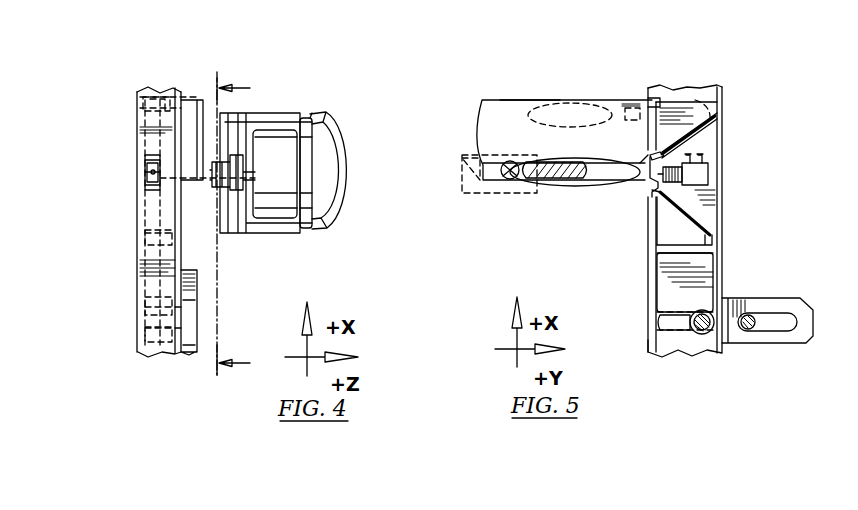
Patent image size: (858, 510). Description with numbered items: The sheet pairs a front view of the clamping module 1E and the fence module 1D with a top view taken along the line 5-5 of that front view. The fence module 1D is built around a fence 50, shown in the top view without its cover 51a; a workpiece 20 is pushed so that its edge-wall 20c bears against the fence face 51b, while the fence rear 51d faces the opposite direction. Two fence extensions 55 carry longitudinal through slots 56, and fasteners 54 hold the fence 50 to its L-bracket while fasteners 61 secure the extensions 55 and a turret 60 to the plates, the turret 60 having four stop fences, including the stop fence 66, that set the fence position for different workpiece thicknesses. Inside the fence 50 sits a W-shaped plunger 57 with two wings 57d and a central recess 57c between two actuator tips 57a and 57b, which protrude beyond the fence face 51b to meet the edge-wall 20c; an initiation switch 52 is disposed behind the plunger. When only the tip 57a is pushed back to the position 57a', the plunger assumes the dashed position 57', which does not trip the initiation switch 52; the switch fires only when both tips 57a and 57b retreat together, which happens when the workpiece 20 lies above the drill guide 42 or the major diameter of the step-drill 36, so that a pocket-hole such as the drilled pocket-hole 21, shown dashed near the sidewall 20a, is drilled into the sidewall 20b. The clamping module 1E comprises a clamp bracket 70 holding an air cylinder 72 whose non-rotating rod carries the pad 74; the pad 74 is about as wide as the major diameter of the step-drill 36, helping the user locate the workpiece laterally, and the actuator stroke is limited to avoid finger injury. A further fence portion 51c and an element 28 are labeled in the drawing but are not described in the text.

In FIG. 4, the fence module 1D is at (155, 86).
In FIG. 5, the fence module 1D is at (730, 233).
In FIG. 4, the clamping module 1E is at (312, 113).
In FIG. 4, the line 5- 5 is at (243, 227).
In FIG. 4, the first workpiece 20 is at (186, 98).
In FIG. 5, the first workpiece 20 is at (481, 128).
In FIG. 5, the sidewall 20a is at (530, 100).
In FIG. 5, the sidewall 20b is at (621, 189).
In FIG. 5, the edge-wall 20c is at (652, 97).
In FIG. 5, the drilled pocket-hole 21 is at (565, 102).
In FIG. 5, the frame edge 28 is at (648, 352).
In FIG. 5, the step-drill 36 is at (480, 185).
In FIG. 5, the drill guide 42 is at (560, 190).
In FIG. 4, the fence 50 is at (148, 357).
In FIG. 5, the fence 50 is at (708, 358).
In FIG. 4, the cover 51a is at (181, 358).
In FIG. 4, the fence face 51b is at (148, 286).
In FIG. 5, the fence face 51b is at (647, 288).
In FIG. 4, the plate bracket 51c is at (147, 157).
In FIG. 5, the plate bracket 51c is at (647, 255).
In FIG. 5, the fence rear 51d is at (723, 278).
In FIG. 4, the initiation switch 52 is at (145, 188).
In FIG. 5, the initiation switch 52 is at (708, 172).
In FIG. 5, the fasteners 54 is at (702, 334).
In FIG. 5, the fence extensions 55 is at (813, 326).
In FIG. 5, the longitudinal through slots 56 is at (765, 311).
In FIG. 4, the W-shaped plunger 57 is at (133, 110).
In FIG. 5, the W-shaped plunger 57 is at (715, 118).
In FIG. 5, the W-shaped plunger (displaced position) 57' is at (685, 89).
In FIG. 5, the actuator tip 57a is at (604, 98).
In FIG. 5, the new position of actuator tip 57a' is at (720, 155).
In FIG. 4, the actuator tip 57b is at (143, 195).
In FIG. 5, the actuator tip 57b is at (645, 195).
In FIG. 5, the central recess 57c is at (643, 190).
In FIG. 5, the wings 57d is at (700, 227).
In FIG. 4, the turret 60 is at (197, 318).
In FIG. 5, the fastener 61 is at (751, 331).
In FIG. 4, the stop fence 66 is at (187, 348).
In FIG. 4, the clamp bracket 70 is at (290, 234).
In FIG. 4, the air cylinder 72 is at (347, 222).
In FIG. 4, the pad 74 is at (222, 190).
In FIG. 5, the pad 74 is at (530, 183).